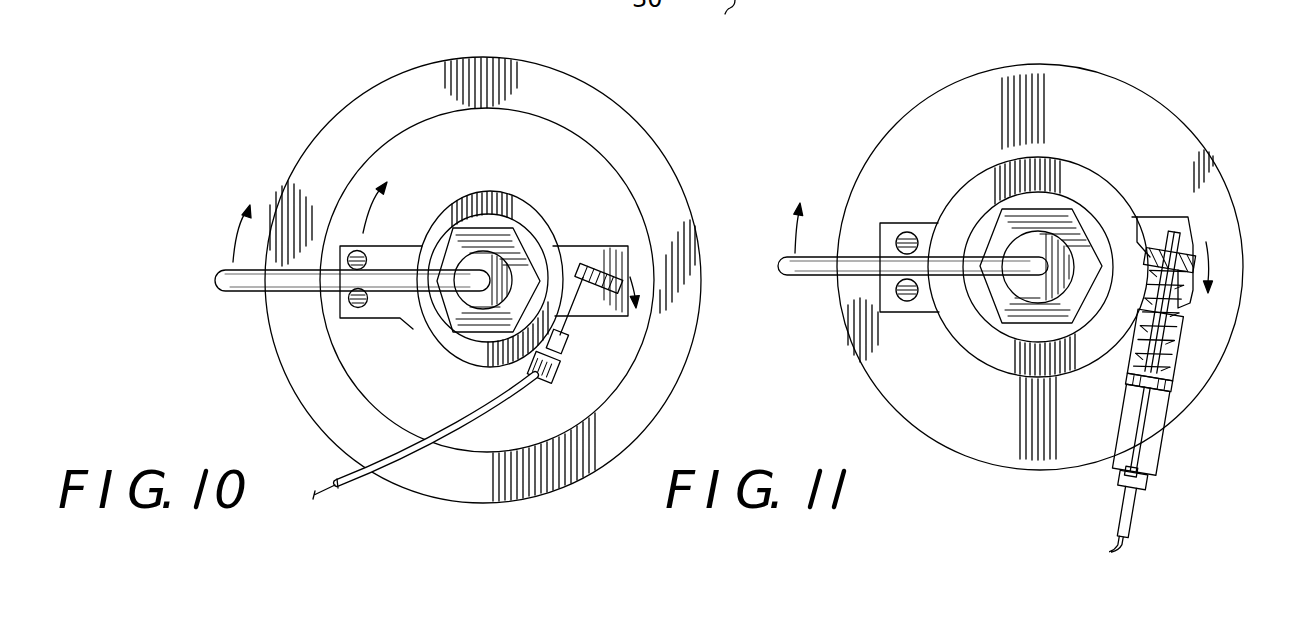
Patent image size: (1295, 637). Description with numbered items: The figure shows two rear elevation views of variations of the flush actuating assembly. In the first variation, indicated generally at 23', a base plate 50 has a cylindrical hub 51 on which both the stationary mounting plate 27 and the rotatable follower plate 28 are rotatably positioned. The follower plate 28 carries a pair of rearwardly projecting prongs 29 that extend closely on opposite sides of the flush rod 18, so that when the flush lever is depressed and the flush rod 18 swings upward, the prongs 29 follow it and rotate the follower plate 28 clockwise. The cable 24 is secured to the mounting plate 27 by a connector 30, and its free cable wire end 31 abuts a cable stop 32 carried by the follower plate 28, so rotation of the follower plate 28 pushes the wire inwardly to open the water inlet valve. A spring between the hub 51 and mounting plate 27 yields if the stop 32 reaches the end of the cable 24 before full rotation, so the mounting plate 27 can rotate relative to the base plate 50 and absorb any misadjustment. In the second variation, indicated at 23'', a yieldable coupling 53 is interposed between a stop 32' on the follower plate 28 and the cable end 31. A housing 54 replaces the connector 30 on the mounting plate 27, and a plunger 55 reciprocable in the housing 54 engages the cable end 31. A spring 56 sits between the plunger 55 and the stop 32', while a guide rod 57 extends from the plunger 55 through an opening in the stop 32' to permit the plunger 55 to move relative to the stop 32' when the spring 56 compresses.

In FIG. 10, the flush rod 18 is at (290, 272).
In FIG. 11, the flush rod 18 is at (822, 255).
In FIG. 10, the actuator assembly variation 23' is at (440, 280).
In FIG. 11, the actuator assembly variation 23'' is at (1026, 277).
In FIG. 10, the cable 24 is at (462, 426).
In FIG. 11, the cable 24 is at (1130, 512).
In FIG. 10, the mounting plate 27 is at (634, 203).
In FIG. 11, the mounting plate 27 is at (1001, 62).
In FIG. 10, the follower plate 28 is at (482, 192).
In FIG. 11, the follower plate 28 is at (1041, 157).
In FIG. 10, the prongs 29 is at (366, 297).
In FIG. 11, the prongs 29 is at (905, 292).
In FIG. 10, the connector 30 is at (558, 375).
In FIG. 10, the cable wire end 31 is at (592, 318).
In FIG. 11, the cable wire end 31 is at (1140, 437).
In FIG. 10, the cable stop 32 is at (658, 240).
In FIG. 11, the stop 32' is at (1161, 229).
In FIG. 10, the base plate 50 is at (627, 113).
In FIG. 10, the cylindrical hub 51 is at (520, 228).
In FIG. 11, the yieldable coupling 53 is at (1104, 380).
In FIG. 11, the housing 54 is at (1112, 430).
In FIG. 11, the plunger 55 is at (1167, 387).
In FIG. 11, the spring 56 is at (1173, 362).
In FIG. 11, the guide rod 57 is at (1182, 243).